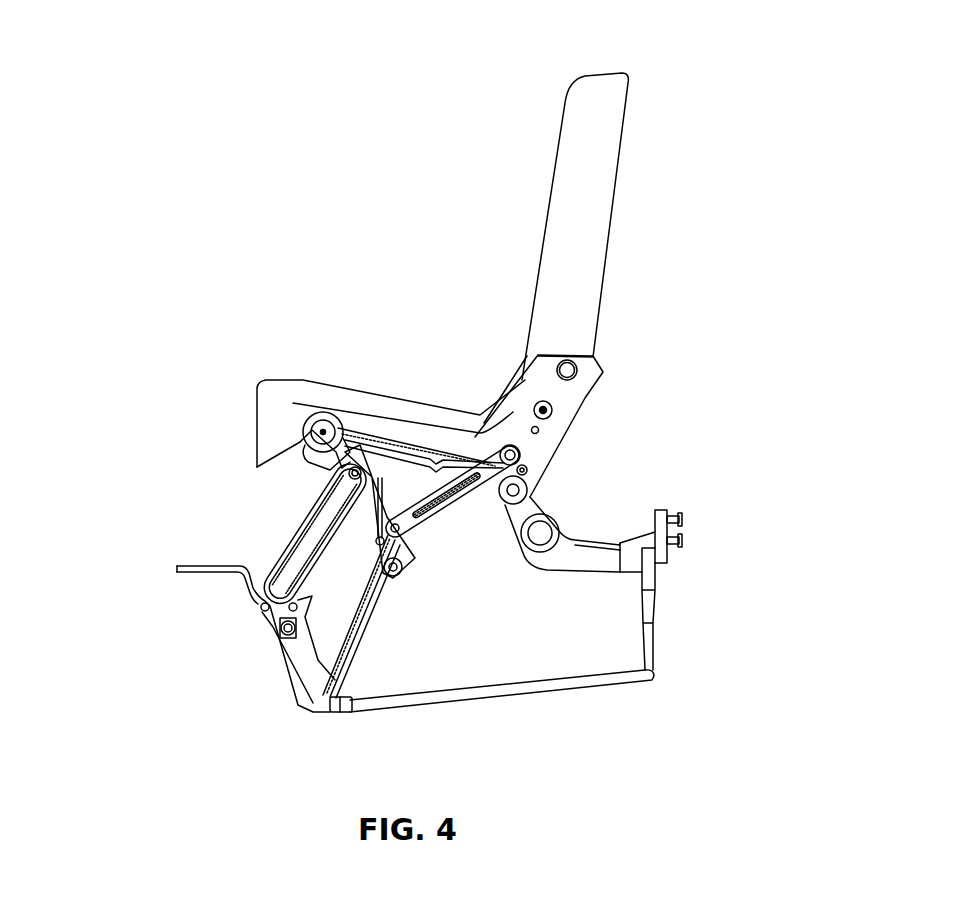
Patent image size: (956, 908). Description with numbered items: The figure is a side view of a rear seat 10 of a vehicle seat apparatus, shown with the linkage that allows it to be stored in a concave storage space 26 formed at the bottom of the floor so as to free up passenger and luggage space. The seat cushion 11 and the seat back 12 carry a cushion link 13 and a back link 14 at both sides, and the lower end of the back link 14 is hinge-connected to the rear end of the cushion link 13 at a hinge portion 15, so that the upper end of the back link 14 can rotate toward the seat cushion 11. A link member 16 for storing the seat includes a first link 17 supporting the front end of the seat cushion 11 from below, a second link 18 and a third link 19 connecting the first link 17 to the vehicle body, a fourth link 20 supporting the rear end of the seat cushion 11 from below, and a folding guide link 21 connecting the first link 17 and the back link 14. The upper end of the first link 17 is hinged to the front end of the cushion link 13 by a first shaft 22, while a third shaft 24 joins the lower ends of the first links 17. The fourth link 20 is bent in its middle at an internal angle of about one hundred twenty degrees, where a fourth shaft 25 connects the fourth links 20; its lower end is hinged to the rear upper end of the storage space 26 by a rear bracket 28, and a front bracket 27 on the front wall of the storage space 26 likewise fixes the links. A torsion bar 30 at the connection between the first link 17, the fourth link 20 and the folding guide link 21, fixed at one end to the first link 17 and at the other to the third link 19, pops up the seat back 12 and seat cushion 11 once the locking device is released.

The rear seat 10 is at (398, 192).
The seat cushion 11 is at (330, 390).
The seat back 12 is at (585, 152).
The cushion link 13 is at (375, 430).
The back link 14 is at (553, 395).
The hinge portion 15 is at (553, 412).
The link member 16 is at (440, 571).
The first link 17 is at (303, 466).
The second link 18 is at (298, 558).
The third link 19 is at (372, 622).
The fourth link 20 is at (568, 552).
The folding guide link 21 is at (463, 507).
The first shaft 22 is at (322, 430).
The third shaft 24 is at (405, 573).
The fourth shaft 25 is at (543, 533).
The storage space 26 is at (530, 650).
The front bracket 27 is at (303, 672).
The rear bracket 28 is at (657, 540).
The torsion bar 30 is at (383, 472).